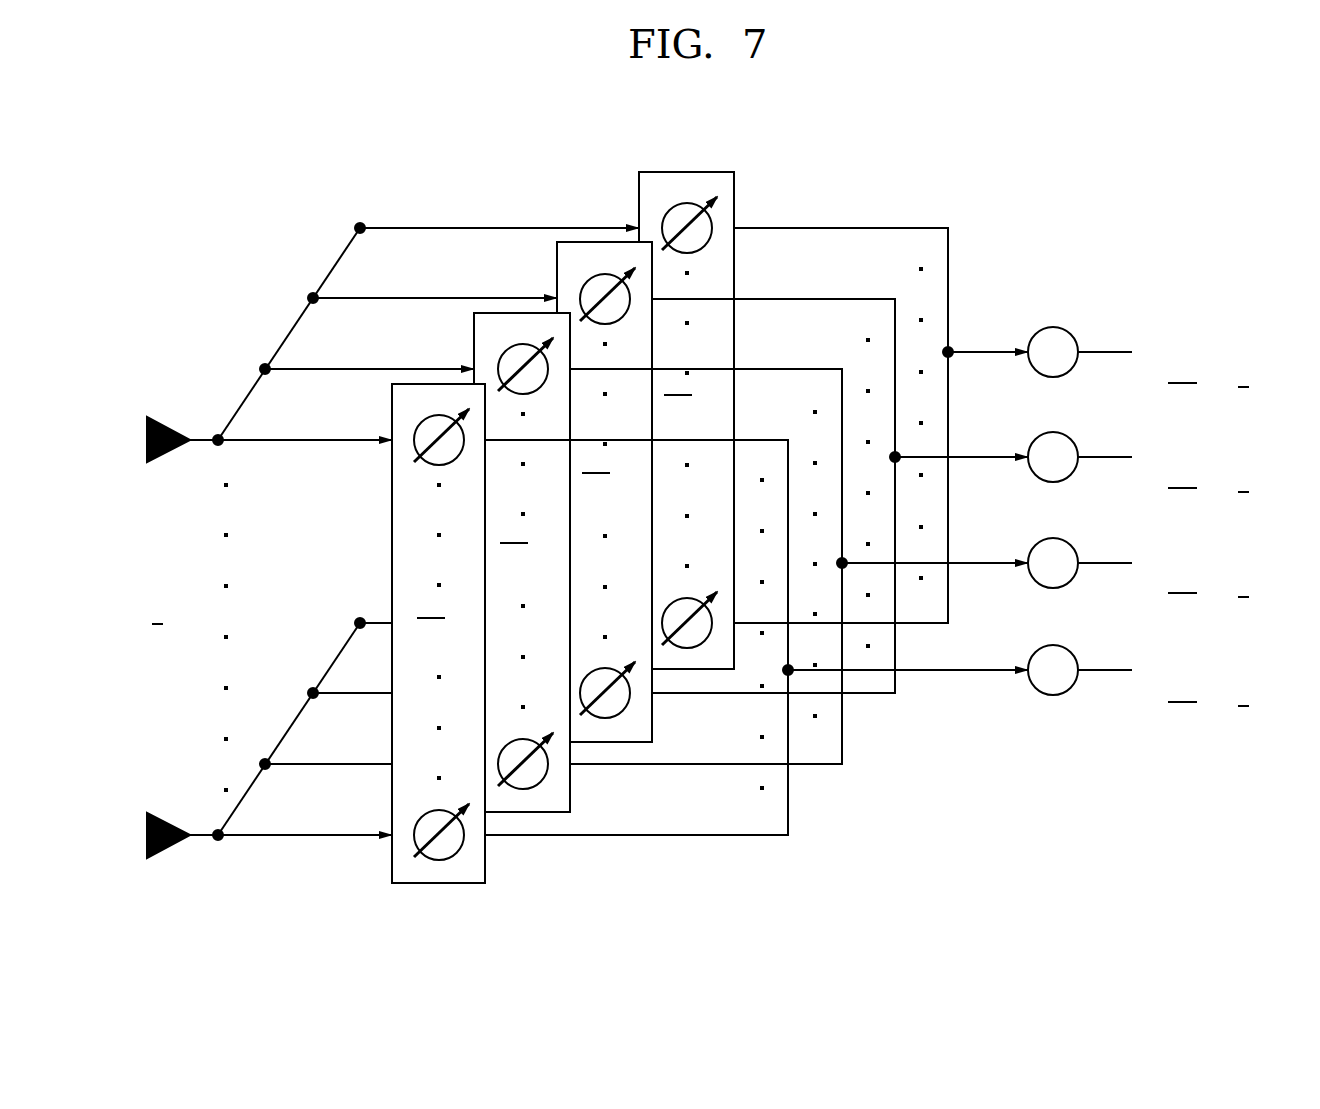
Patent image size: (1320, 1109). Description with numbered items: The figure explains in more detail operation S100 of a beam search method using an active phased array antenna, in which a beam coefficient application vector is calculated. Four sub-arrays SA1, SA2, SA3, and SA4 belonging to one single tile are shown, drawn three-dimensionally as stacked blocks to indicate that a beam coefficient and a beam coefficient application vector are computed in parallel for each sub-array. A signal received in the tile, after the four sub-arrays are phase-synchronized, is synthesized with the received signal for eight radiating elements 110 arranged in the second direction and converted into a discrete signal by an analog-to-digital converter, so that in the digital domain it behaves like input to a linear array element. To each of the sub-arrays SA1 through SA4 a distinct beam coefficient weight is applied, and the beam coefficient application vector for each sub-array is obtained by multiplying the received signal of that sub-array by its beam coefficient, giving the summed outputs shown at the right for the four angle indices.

The radiating element 110 is at (422, 421).
The operation of calculating a beam coefficient application vector S100 is at (1155, 175).
The first sub-array SA1 is at (329, 629).
The second sub-array SA2 is at (530, 812).
The third sub-array SA3 is at (608, 742).
The fourth sub-array SA4 is at (690, 669).